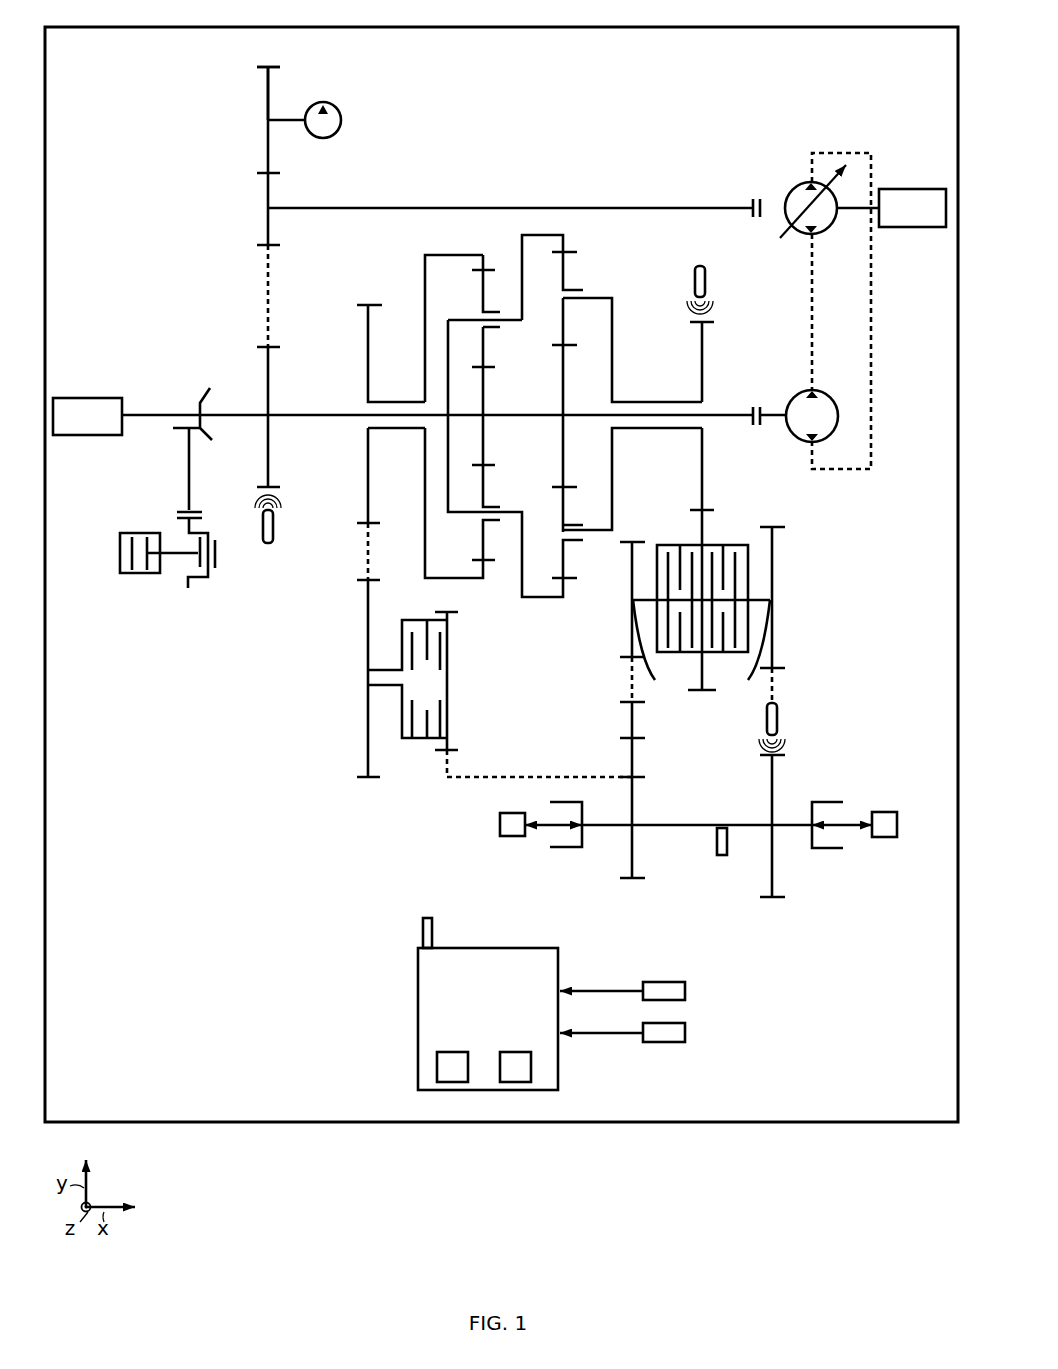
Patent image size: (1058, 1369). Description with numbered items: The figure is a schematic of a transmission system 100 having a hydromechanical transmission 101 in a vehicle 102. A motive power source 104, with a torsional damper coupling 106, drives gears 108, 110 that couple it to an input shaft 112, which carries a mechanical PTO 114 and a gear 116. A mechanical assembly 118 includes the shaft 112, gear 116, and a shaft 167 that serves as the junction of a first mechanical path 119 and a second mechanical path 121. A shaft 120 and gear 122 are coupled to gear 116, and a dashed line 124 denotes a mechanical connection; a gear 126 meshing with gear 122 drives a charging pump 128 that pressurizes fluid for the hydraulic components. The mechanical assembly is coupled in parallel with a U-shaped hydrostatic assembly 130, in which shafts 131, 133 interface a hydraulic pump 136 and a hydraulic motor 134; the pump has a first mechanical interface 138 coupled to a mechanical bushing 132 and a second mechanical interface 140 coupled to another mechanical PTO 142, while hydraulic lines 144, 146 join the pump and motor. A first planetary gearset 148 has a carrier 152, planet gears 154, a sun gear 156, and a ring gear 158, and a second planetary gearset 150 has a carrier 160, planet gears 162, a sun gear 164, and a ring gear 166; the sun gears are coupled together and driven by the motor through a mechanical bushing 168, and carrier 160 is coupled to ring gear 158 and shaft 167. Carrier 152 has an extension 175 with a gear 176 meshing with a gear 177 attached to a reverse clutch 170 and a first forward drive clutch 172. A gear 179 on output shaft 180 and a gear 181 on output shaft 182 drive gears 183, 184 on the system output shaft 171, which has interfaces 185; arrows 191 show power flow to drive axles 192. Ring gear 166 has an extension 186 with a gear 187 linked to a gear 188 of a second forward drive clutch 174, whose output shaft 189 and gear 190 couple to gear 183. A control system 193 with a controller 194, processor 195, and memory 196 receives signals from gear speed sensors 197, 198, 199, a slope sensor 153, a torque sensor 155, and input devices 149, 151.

The transmission system 100 is at (86, 80).
The hydromechanical transmission 101 is at (145, 148).
The vehicle 102 is at (52, 27).
The motive power source 104 is at (188, 628).
The torsional damper coupling 106 is at (180, 512).
The gear 108 is at (176, 432).
The gear 110 is at (203, 392).
The input shaft 112 is at (240, 413).
The mechanical PTO 114 is at (60, 399).
The gear 116 is at (271, 391).
The mechanical assembly 118 is at (205, 272).
The first mechanical path 119 is at (330, 357).
The shaft 120 is at (337, 208).
The second mechanical path 121 is at (335, 435).
The gear 122 is at (268, 186).
The dashed line 124 is at (268, 307).
The gear 126 is at (276, 78).
The charging pump 128 is at (342, 121).
The hydrostatic assembly 130 is at (895, 160).
The shaft 131 is at (777, 205).
The mechanical bushing 132 is at (757, 194).
The shaft 133 is at (770, 420).
The hydraulic motor 134 is at (795, 396).
The hydraulic pump 136 is at (794, 187).
The first mechanical interface 138 is at (782, 216).
The second mechanical interface 140 is at (838, 220).
The mechanical PTO 142 is at (885, 228).
The hydraulic line 144 is at (845, 152).
The hydraulic line 146 is at (810, 315).
The first planetary gearset 148 is at (590, 252).
The input device 149 is at (663, 1043).
The second planetary gearset 150 is at (412, 252).
The input device 151 is at (661, 982).
The carrier 152 is at (598, 300).
The slope sensor 153 is at (423, 935).
The planet gears 154 is at (566, 262).
The torque sensor 155 is at (717, 842).
The sun gear 156 is at (561, 406).
The ring gear 158 is at (548, 238).
The carrier 160 is at (482, 320).
The planet gears 162 is at (482, 277).
The sun gear 164 is at (484, 408).
The ring gear 166 is at (482, 258).
The shaft 167 is at (338, 413).
The mechanical bushing 168 is at (758, 405).
The reverse clutch 170 is at (660, 535).
The system output shaft 171 is at (667, 825).
The first forward drive clutch 172 is at (736, 535).
The second forward drive clutch 174 is at (407, 615).
The extension 175 is at (628, 403).
The gear 176 is at (700, 360).
The gear 177 is at (700, 532).
The gear 179 is at (625, 648).
The output shaft 180 is at (656, 652).
The gear 181 is at (778, 655).
The output shaft 182 is at (748, 652).
The gear 183 is at (636, 800).
The gear 184 is at (770, 805).
The interfaces 185 is at (564, 860).
The extension 186 is at (395, 400).
The gear 187 is at (367, 303).
The gear 188 is at (367, 625).
The output shaft 189 is at (368, 677).
The gear 190 is at (450, 748).
The arrows 191 is at (560, 828).
The drive axles 192 is at (500, 825).
The control system 193 is at (345, 1045).
The controller 194 is at (474, 1044).
The processor 195 is at (437, 1068).
The memory 196 is at (531, 1068).
The gear speed sensor 197 is at (268, 545).
The gear speed sensor 198 is at (778, 717).
The gear speed sensor 199 is at (706, 280).